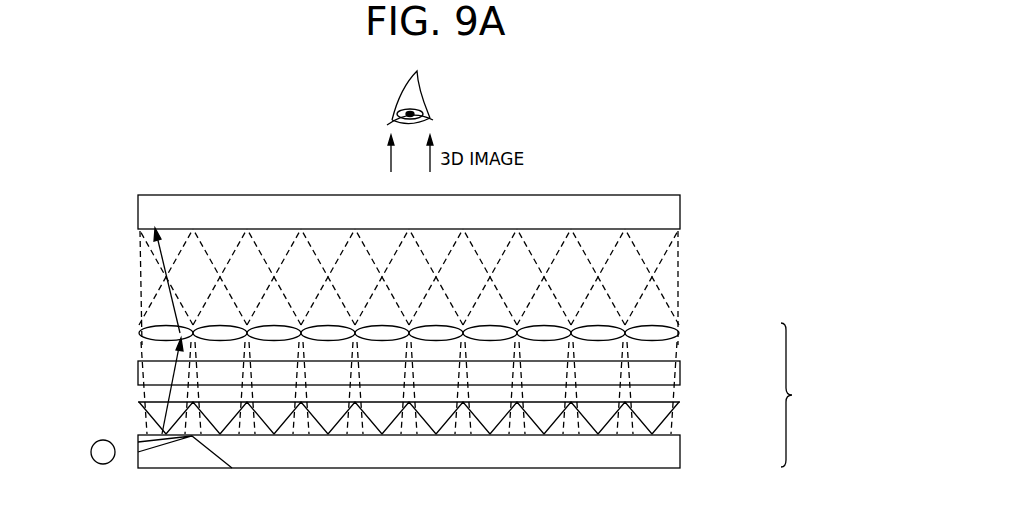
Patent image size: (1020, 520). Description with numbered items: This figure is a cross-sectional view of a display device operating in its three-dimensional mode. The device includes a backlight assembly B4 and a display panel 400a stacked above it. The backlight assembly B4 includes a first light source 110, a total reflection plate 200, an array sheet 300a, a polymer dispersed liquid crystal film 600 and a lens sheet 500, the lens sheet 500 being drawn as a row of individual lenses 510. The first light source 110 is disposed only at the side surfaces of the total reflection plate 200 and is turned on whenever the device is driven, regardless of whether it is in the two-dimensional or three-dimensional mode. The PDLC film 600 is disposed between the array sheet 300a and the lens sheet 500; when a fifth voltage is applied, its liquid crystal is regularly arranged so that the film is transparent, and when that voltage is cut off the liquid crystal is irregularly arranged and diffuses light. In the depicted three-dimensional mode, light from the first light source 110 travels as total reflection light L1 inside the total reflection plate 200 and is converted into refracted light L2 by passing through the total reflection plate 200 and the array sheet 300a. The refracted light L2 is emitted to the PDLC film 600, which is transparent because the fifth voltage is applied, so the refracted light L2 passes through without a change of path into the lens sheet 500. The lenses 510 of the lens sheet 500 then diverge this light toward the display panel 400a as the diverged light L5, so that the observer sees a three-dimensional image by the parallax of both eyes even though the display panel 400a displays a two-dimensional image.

The display panel 400a is at (678, 212).
The lens sheet 500 is at (402, 321).
The lenses 510 is at (675, 333).
The polymer dispersed liquid crystal (PDLC) film 600 is at (678, 372).
The array sheet 300a is at (684, 420).
The total reflection plate 200 is at (678, 454).
The first light source 110 is at (91, 452).
The total reflection light L1 is at (238, 466).
The refracted light L2 is at (172, 392).
The diverged light L5 is at (166, 280).
The backlight assembly B4 is at (800, 395).